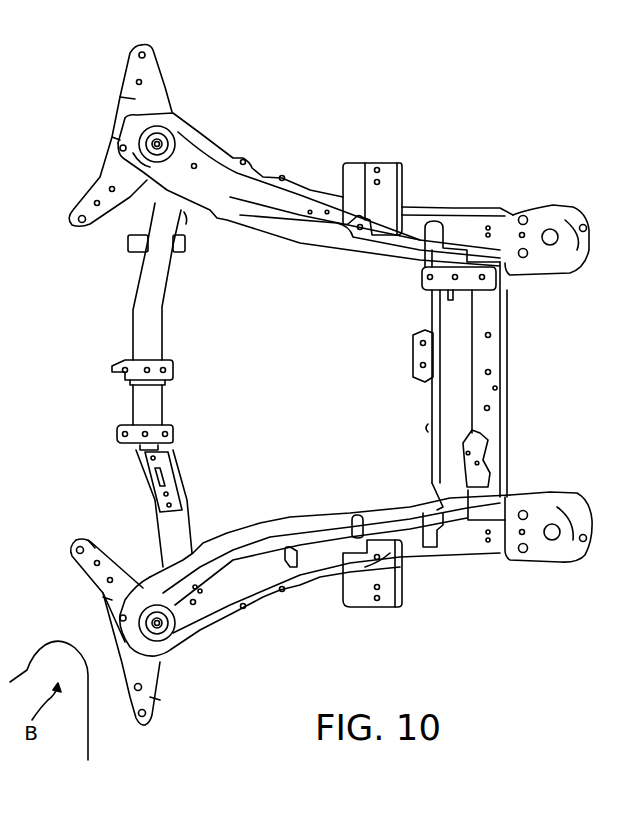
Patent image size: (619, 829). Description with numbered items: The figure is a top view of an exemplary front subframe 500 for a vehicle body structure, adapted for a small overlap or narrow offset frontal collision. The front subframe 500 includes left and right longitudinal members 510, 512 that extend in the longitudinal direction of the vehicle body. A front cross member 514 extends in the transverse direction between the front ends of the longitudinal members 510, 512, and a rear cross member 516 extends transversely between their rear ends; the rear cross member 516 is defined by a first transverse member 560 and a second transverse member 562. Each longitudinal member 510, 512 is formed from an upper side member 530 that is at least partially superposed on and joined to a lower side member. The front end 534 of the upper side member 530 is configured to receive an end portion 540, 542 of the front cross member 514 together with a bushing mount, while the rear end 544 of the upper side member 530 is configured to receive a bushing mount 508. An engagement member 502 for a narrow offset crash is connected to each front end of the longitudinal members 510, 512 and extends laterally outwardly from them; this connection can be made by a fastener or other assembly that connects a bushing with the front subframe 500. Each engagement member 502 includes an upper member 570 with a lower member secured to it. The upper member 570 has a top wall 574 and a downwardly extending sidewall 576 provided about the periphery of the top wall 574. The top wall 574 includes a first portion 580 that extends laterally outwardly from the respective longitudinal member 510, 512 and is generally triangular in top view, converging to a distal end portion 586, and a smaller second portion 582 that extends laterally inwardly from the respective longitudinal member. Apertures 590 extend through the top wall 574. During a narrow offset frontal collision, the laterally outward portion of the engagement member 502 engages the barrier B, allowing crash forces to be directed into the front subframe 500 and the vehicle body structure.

The front subframe 500 is at (484, 120).
The engagement member 502 is at (183, 72).
The bushing mount 508 is at (550, 536).
The left longitudinal member 510 is at (268, 520).
The right longitudinal member 512 is at (301, 243).
The front cross member 514 is at (162, 317).
The rear cross member 516 is at (507, 382).
The upper side member 530 is at (253, 193).
The front end of upper side member 534 is at (173, 125).
The end portion of front cross member 540 is at (180, 540).
The end portion of front cross member 542 is at (186, 218).
The rear end of upper side member 544 is at (555, 206).
The first transverse member 560 is at (425, 400).
The second transverse member 562 is at (505, 343).
The upper member 570 is at (122, 100).
The top wall 574 is at (108, 603).
The sidewall 576 is at (113, 138).
The first portion 580 is at (150, 697).
The second portion 582 is at (95, 550).
The distal end portion 586 is at (142, 717).
The apertures 590 is at (135, 688).